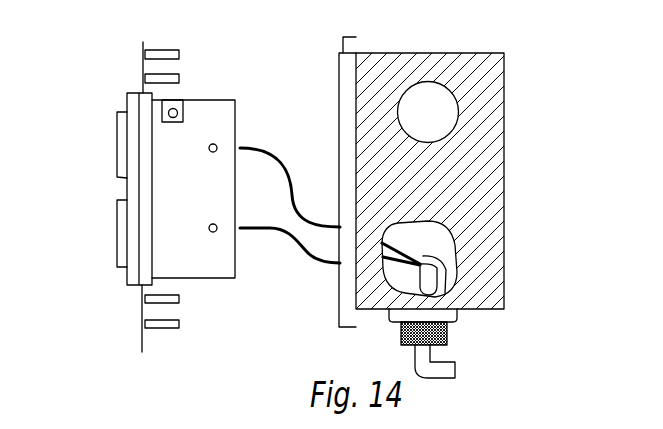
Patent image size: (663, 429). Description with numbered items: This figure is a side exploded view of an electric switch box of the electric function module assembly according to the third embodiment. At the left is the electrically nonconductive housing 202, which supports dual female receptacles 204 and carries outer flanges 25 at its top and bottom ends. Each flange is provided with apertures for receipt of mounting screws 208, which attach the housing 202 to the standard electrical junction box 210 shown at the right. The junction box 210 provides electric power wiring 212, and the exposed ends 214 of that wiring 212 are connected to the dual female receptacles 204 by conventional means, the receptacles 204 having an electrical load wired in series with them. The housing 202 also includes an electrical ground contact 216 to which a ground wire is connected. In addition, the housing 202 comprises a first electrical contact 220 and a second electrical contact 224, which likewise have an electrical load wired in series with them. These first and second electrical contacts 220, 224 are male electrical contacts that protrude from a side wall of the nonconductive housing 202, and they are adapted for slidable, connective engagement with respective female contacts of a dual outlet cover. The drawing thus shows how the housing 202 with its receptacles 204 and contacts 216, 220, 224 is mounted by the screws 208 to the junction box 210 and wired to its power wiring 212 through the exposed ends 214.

The outer flanges 25 is at (143, 42).
The mounting screws 208 is at (140, 79).
The dual female receptacles 204 is at (117, 141).
The nonconductive housing 202 is at (183, 100).
The electrical ground contact 216 is at (177, 112).
The first electrical contact 220 is at (216, 144).
The second electrical contact 224 is at (213, 233).
The exposed ends 214 is at (242, 148).
The electrical junction box 210 is at (501, 163).
The electric power wiring 212 is at (418, 253).